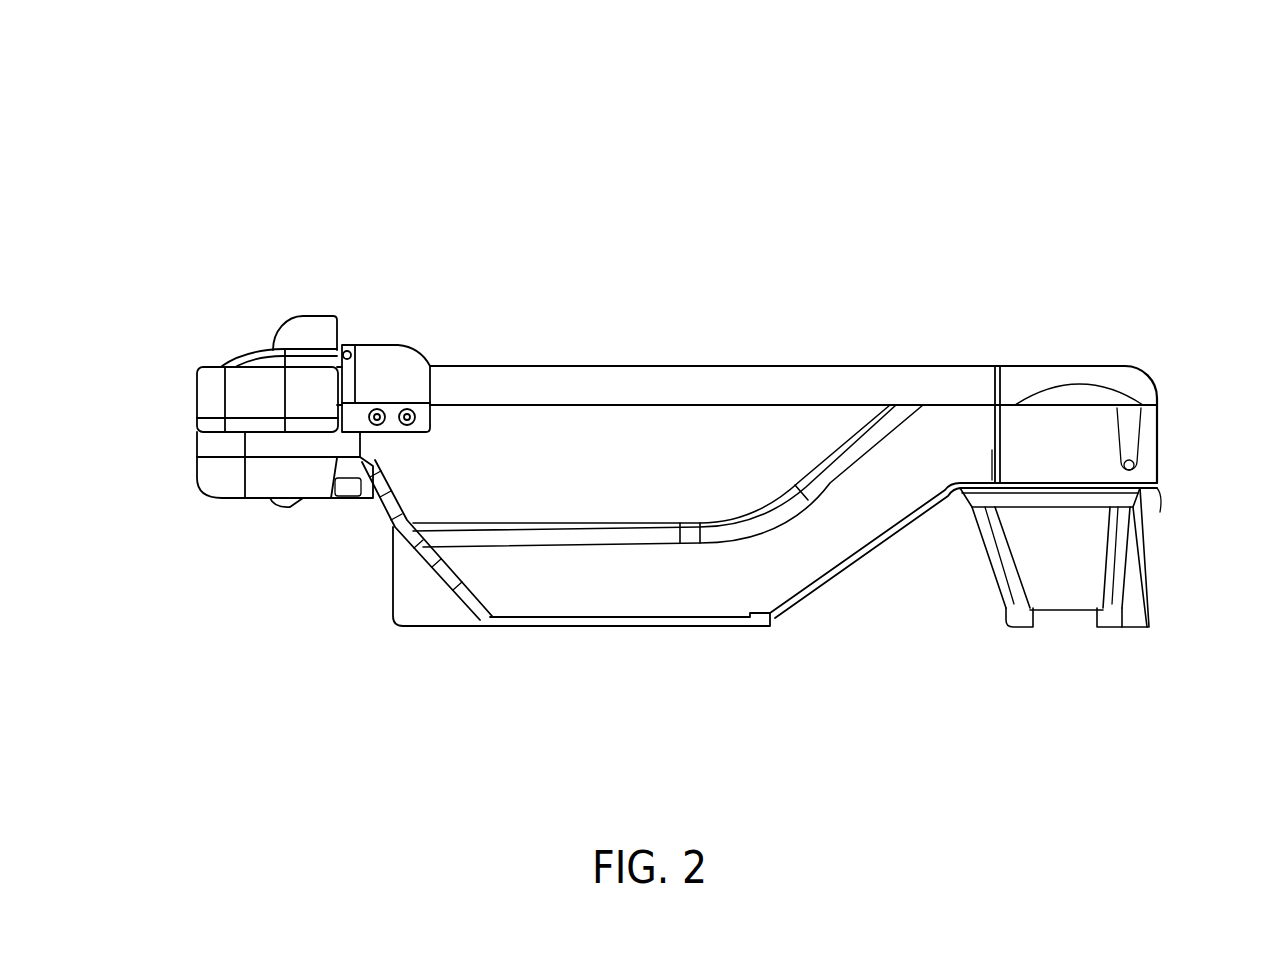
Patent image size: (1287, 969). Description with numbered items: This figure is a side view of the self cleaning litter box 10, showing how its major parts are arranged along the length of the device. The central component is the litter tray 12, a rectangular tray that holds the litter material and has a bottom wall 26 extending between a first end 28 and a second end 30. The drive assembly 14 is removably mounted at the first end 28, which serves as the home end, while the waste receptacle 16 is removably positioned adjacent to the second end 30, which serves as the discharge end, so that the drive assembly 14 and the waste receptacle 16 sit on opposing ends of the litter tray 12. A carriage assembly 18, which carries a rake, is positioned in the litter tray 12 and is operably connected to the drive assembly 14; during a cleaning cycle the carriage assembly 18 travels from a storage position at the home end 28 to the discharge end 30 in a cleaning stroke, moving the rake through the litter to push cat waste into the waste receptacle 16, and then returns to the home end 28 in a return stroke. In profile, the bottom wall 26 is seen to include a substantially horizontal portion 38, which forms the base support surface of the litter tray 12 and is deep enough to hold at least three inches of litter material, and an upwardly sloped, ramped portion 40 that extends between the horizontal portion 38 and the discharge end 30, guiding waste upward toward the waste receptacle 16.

The self cleaning litter box 10 is at (560, 186).
The litter tray 12 is at (658, 378).
The drive assembly 14 is at (213, 365).
The waste receptacle 16 is at (1153, 553).
The carriage assembly 18 is at (377, 367).
The bottom wall 26 is at (662, 627).
The first end 28 is at (352, 508).
The second end 30 is at (1047, 358).
The horizontal portion 38 is at (542, 625).
The upwardly sloped portion 40 is at (880, 548).